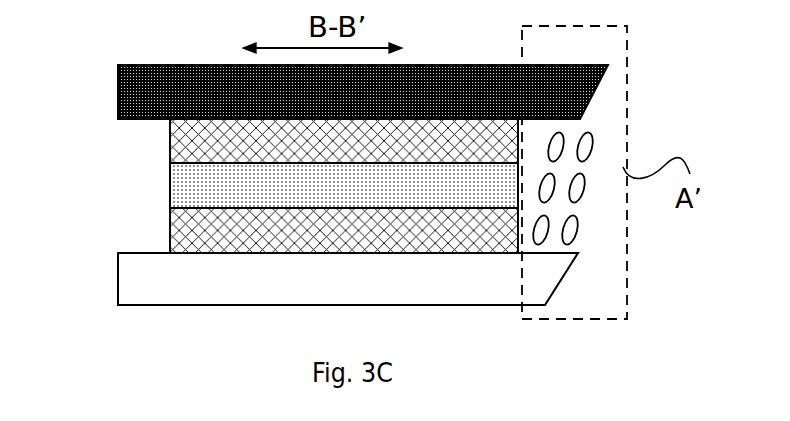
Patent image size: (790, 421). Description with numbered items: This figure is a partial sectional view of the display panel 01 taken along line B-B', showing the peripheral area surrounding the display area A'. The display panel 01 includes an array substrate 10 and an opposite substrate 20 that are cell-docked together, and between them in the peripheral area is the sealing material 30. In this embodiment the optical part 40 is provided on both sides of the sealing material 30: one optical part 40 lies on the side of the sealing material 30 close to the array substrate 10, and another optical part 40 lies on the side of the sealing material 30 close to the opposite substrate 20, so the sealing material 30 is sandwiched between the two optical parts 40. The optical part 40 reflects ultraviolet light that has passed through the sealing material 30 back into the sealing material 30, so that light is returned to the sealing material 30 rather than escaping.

The display panel 01 is at (97, 76).
The array substrate 10 is at (540, 280).
The opposite substrate 20 is at (565, 92).
The sealing material 30 is at (190, 190).
The optical part 40 is at (190, 143).